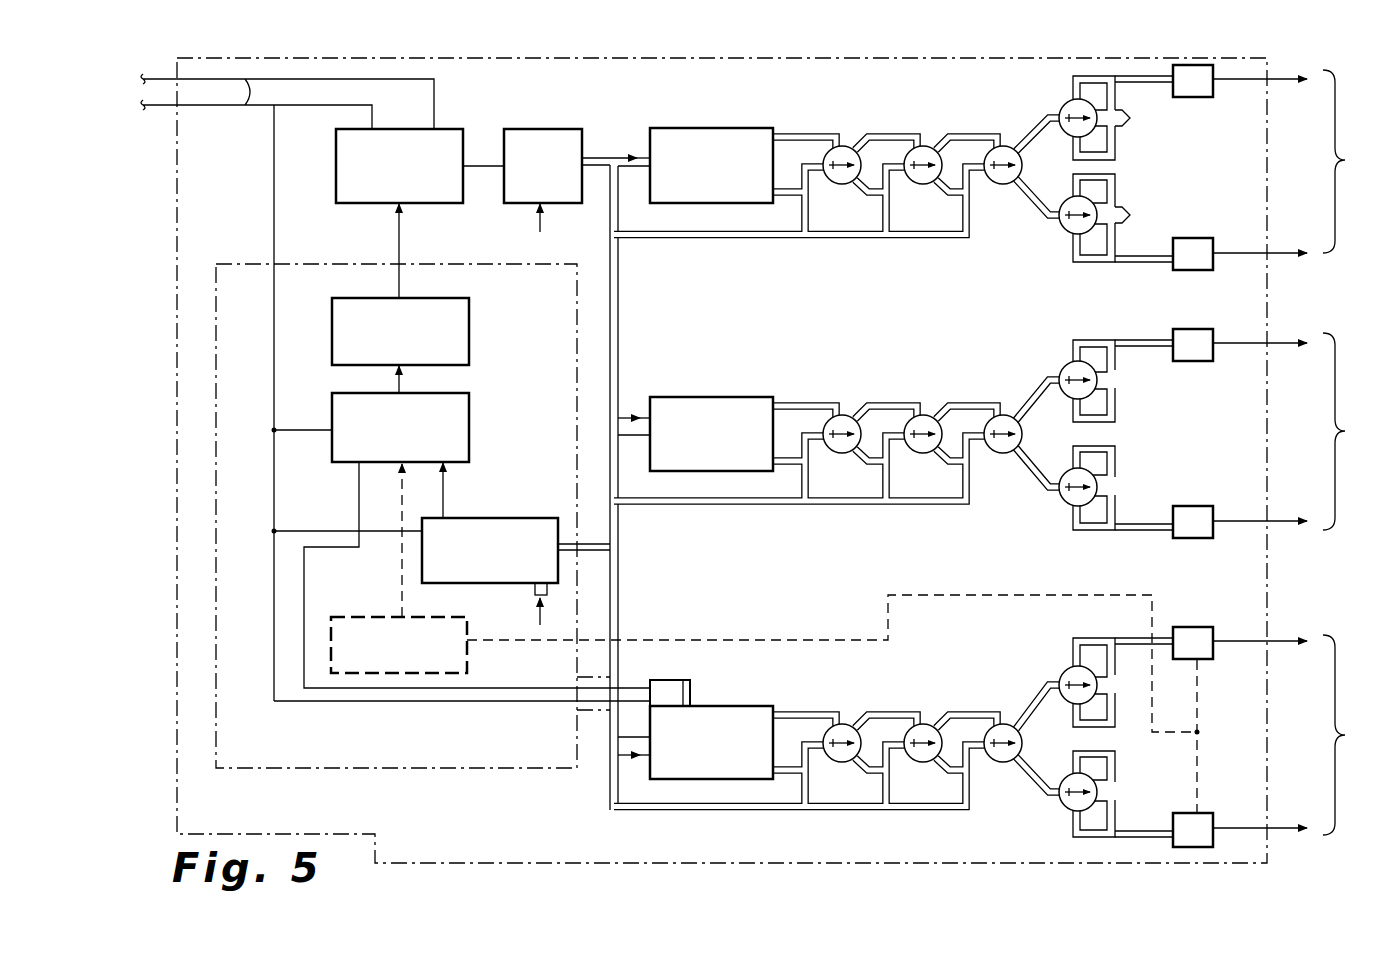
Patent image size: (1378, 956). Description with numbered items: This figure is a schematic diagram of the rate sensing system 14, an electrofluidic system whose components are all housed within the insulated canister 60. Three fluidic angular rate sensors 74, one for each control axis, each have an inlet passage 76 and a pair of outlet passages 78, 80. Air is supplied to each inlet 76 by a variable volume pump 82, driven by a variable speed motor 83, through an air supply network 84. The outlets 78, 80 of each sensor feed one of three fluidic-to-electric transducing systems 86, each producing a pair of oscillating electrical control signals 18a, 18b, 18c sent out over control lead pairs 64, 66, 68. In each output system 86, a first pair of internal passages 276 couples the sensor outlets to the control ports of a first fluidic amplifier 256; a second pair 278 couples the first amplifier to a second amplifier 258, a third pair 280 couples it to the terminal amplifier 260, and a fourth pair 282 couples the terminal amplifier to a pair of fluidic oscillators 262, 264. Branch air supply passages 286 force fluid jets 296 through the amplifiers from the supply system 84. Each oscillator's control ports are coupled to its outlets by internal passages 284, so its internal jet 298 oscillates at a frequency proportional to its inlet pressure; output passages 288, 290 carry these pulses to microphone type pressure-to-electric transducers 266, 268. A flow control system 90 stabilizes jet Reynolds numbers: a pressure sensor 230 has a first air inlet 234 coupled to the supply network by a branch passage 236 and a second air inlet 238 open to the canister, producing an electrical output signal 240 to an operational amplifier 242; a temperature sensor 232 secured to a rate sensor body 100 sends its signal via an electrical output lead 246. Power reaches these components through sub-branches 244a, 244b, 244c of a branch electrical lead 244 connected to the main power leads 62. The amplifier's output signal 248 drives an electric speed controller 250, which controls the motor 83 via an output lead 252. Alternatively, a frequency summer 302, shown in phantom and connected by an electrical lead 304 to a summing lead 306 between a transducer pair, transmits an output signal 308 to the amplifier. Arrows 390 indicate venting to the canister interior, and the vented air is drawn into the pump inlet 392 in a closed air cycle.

The rate sensing system 14 is at (560, 800).
The control signal 18a is at (1350, 161).
The control signal 18b is at (1350, 431).
The control signal 18c is at (1350, 735).
The canister 60 is at (489, 863).
The main power leads 62 is at (242, 105).
The control lead pair 64 is at (1276, 79).
The control lead pair 66 is at (1280, 343).
The control lead pair 68 is at (1280, 641).
The fluidic angular rate sensor 74 is at (735, 128).
The inlet passage 76 is at (649, 178).
The outlet passage 78 is at (779, 128).
The outlet passage 80 is at (773, 200).
The variable volume pump 82 is at (548, 129).
The variable speed motor 83 is at (440, 129).
The air supply network 84 is at (606, 156).
The fluidic-to-electric transducing system 86 is at (943, 130).
The flow control system 90 is at (332, 768).
The rate sensor body 100 is at (757, 706).
The pressure sensor 230 is at (488, 518).
The temperature sensor 232 is at (663, 680).
The first air inlet 234 is at (562, 542).
The branch passage 236 is at (606, 543).
The second air inlet 238 is at (535, 590).
The electrical output signal 240 is at (446, 512).
The operational amplifier 242 is at (470, 434).
The branch electrical lead 244 is at (273, 240).
The sub-branch 244a is at (334, 529).
The sub-branch 244b is at (514, 702).
The sub-branch 244c is at (294, 429).
The electrical output lead 246 is at (536, 688).
The output signal 248 is at (406, 385).
The electric speed controller 250 is at (470, 332).
The output lead 252 is at (402, 230).
The first fluidic amplifier 256 is at (850, 147).
The second fluidic amplifier 258 is at (932, 147).
The third or terminal amplifier 260 is at (1004, 146).
The fluidic oscillator 262 is at (1063, 102).
The fluidic oscillator 264 is at (1066, 236).
The pressure-to-electric transducer 266 is at (1197, 99).
The pressure-to-electric transducer 268 is at (1196, 237).
The first pair of internal passages 276 is at (810, 137).
The second pair of internal passages 278 is at (891, 137).
The third pair of internal passages 280 is at (968, 137).
The fourth pair of internal passages 282 is at (1038, 130).
The internal passages 284 is at (1141, 166).
The branch air supply passages 286 is at (810, 239).
The output passage 288 is at (1150, 82).
The output passage 290 is at (1120, 264).
The fluid jets 296 is at (823, 155).
The internal jet 298 is at (1106, 150).
The frequency summer 302 is at (381, 616).
The electrical lead 304 is at (985, 595).
The summing lead 306 is at (1200, 765).
The output signal 308 is at (400, 570).
The arrows 390 is at (758, 208).
The pump inlet 392 is at (538, 232).